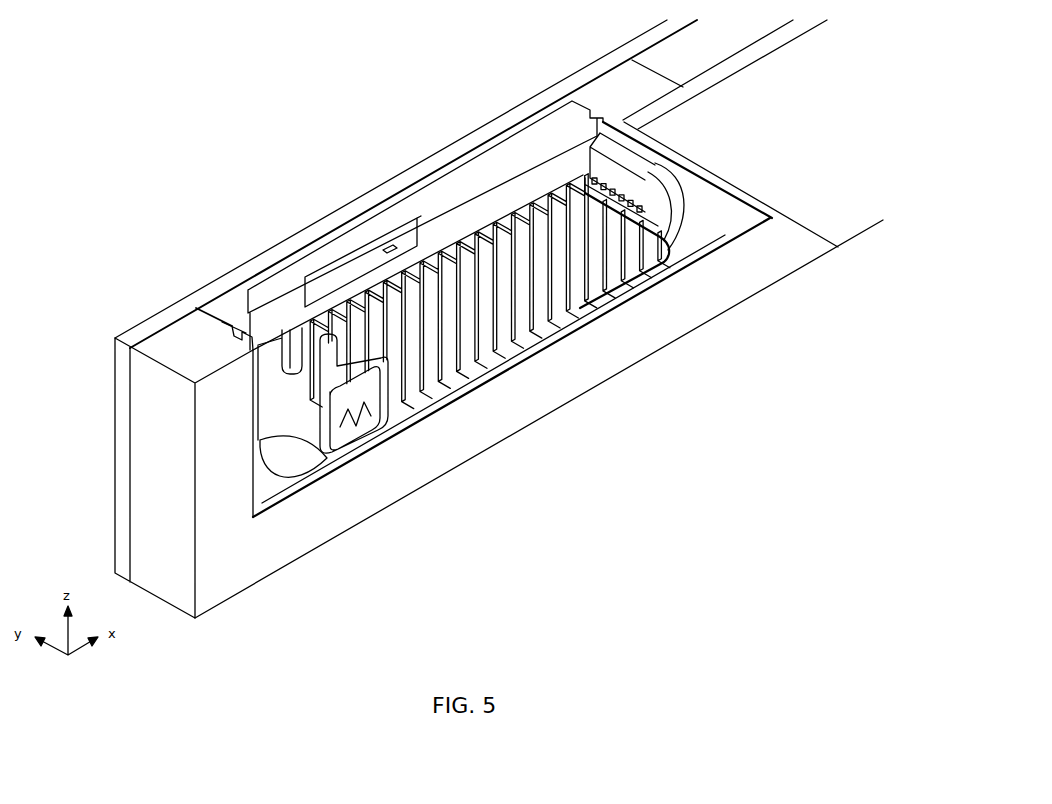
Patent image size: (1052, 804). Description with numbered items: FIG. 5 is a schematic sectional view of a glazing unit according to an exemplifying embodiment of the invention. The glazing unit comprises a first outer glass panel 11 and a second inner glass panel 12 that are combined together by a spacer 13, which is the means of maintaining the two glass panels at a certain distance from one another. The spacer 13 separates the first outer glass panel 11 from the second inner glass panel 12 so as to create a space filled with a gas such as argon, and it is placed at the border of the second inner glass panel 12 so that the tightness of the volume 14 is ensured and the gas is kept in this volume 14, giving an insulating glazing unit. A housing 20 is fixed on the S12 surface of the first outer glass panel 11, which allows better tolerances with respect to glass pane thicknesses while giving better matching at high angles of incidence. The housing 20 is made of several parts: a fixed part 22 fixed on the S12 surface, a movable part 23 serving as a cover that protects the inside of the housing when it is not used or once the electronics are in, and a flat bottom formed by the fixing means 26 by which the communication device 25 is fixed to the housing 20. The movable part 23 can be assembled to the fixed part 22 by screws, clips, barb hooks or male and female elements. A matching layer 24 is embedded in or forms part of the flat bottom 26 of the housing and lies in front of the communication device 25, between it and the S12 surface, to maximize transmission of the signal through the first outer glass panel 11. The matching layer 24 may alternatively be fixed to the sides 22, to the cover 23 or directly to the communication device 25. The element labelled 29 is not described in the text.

The first outer glass panel 11 is at (167, 317).
The second inner glass panel 12 is at (800, 30).
The spacer 13 is at (617, 83).
The volume 14 is at (690, 57).
The housing 20 is at (672, 418).
The fixed part 22 is at (767, 273).
The movable part 23 is at (690, 240).
The matching layer 24 is at (268, 282).
The communication device 25 is at (390, 238).
The fixing means 26 is at (510, 163).
The heat sink fins 29 is at (428, 360).